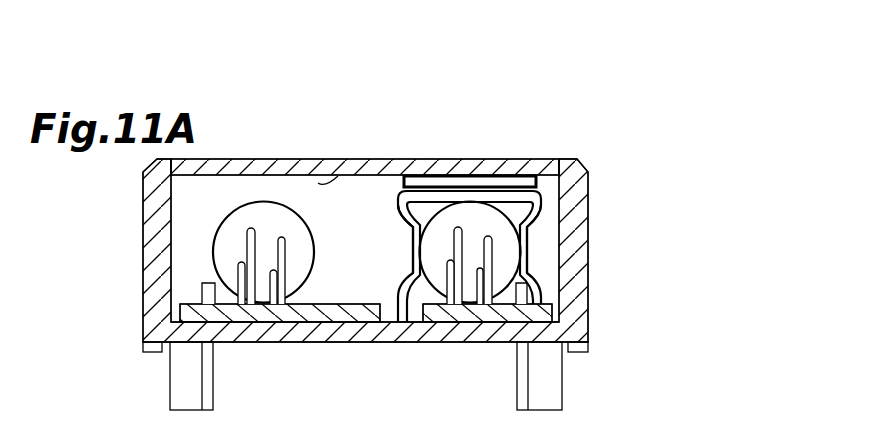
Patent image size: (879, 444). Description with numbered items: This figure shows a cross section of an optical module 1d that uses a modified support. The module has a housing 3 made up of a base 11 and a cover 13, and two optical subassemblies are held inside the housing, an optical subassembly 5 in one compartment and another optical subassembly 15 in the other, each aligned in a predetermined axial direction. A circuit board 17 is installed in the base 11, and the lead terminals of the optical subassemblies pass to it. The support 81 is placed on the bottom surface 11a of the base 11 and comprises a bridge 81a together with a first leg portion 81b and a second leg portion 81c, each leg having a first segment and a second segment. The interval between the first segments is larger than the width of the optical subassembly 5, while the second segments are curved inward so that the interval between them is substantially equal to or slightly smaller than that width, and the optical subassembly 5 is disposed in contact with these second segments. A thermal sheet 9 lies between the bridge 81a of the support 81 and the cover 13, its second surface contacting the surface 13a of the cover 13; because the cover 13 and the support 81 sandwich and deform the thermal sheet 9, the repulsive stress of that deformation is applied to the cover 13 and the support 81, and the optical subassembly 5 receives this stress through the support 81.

The optical module 1d is at (732, 116).
The housing 3 is at (670, 103).
The base 11 is at (588, 201).
The bottom surface 11a is at (410, 310).
The cover 13 is at (557, 161).
The surface of the cover 13a is at (318, 183).
The optical subassembly 5 is at (508, 268).
The optical subassembly 15 is at (296, 267).
The circuit board 17 is at (363, 315).
The thermal sheet 9 is at (524, 181).
The support 81 is at (413, 268).
The bridge 81a is at (483, 192).
The first leg portion 81b is at (406, 218).
The second leg portion 81c is at (533, 210).